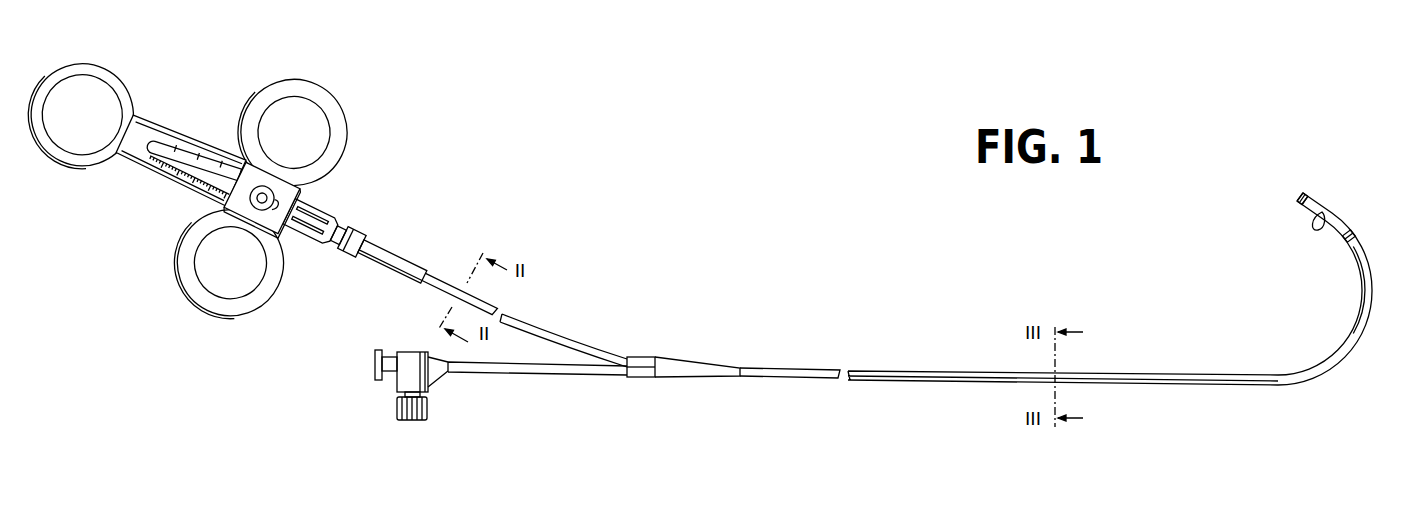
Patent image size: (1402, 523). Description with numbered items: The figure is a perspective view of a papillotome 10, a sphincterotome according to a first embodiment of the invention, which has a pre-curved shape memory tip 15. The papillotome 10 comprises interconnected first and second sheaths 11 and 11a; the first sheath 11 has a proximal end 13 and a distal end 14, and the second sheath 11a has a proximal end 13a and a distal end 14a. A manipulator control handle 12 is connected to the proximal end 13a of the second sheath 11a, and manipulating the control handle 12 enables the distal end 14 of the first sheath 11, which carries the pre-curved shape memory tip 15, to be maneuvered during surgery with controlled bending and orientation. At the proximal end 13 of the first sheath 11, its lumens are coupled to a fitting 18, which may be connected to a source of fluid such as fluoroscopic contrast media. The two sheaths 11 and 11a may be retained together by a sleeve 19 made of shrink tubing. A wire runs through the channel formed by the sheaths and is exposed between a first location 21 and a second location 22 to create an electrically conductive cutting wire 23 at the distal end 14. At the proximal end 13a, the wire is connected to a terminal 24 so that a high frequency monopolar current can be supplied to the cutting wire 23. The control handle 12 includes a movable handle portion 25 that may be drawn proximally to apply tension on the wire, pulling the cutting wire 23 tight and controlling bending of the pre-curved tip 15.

The papillotome 10 is at (650, 188).
The first sheath 11 is at (902, 372).
The second sheath 11a is at (427, 290).
The manipulator control handle 12 is at (120, 73).
The proximal end of first sheath 13 is at (477, 373).
The proximal end of second sheath 13a is at (391, 250).
The distal end of first sheath 14 is at (1302, 193).
The distal end of second sheath 14a is at (613, 357).
The pre-curved shape memory tip 15 is at (1273, 255).
The fitting 18 is at (396, 415).
The sleeve 19 is at (677, 360).
The first location 21 is at (1343, 240).
The second location 22 is at (1303, 205).
The cutting wire 23 is at (1327, 210).
The terminal 24 is at (312, 192).
The movable handle portion 25 is at (212, 313).